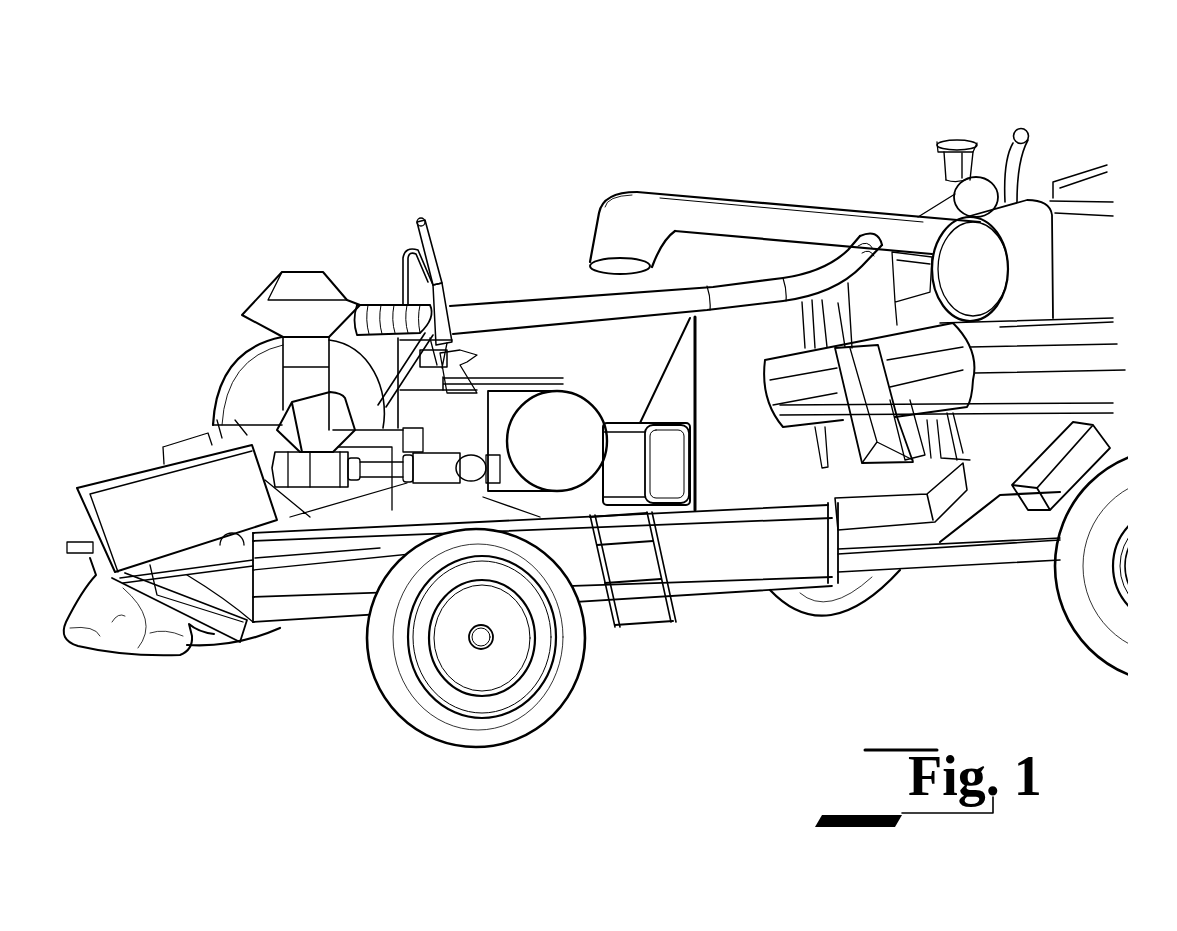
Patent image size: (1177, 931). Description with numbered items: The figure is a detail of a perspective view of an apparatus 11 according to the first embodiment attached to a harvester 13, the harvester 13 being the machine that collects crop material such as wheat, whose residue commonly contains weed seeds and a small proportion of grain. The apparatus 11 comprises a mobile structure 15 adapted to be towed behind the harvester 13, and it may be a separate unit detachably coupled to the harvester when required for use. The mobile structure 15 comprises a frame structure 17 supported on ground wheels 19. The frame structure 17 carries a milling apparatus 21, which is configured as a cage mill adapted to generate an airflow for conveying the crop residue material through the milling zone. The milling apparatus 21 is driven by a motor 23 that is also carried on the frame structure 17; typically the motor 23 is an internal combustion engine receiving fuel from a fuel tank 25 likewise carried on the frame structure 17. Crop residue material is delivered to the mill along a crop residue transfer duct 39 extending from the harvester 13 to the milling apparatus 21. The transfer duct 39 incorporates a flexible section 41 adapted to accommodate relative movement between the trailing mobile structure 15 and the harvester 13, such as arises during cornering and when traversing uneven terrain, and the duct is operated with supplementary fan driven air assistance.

The apparatus 11 is at (362, 230).
The harvester 13 is at (978, 125).
The mobile structure 15 is at (125, 452).
The frame structure 17 is at (315, 580).
The ground wheels 19 is at (437, 728).
The milling apparatus 21 is at (222, 387).
The motor 23 is at (513, 407).
The fuel tank 25 is at (630, 420).
The crop residue transfer duct 39 is at (670, 300).
The flexible section 41 is at (852, 263).